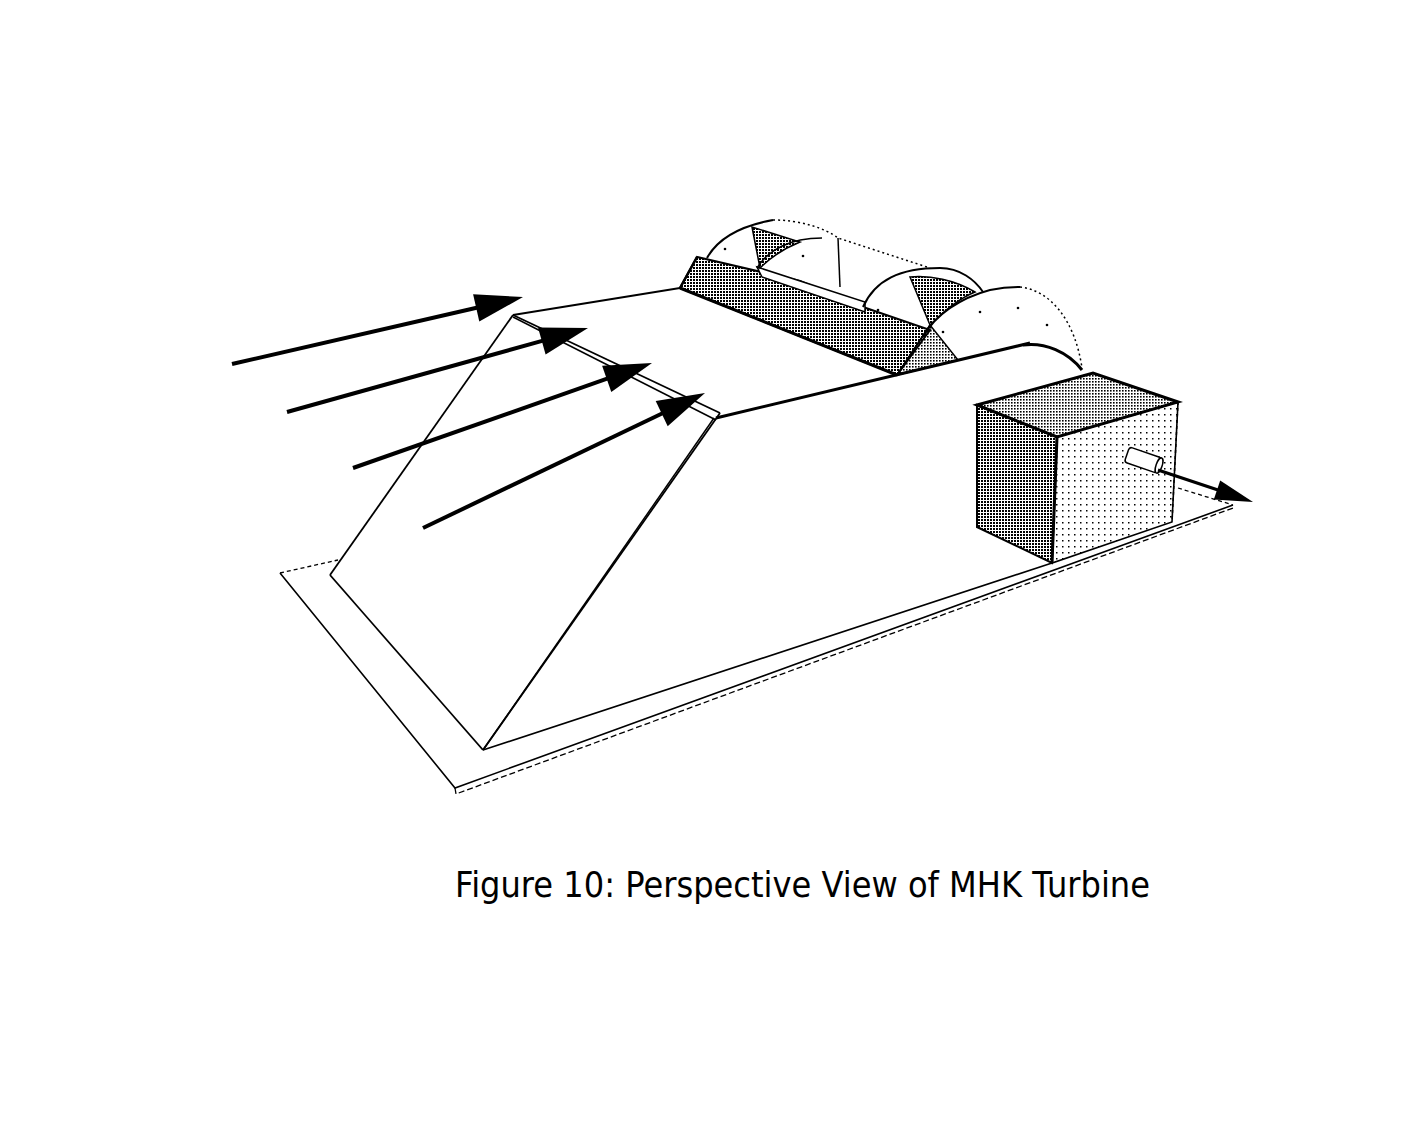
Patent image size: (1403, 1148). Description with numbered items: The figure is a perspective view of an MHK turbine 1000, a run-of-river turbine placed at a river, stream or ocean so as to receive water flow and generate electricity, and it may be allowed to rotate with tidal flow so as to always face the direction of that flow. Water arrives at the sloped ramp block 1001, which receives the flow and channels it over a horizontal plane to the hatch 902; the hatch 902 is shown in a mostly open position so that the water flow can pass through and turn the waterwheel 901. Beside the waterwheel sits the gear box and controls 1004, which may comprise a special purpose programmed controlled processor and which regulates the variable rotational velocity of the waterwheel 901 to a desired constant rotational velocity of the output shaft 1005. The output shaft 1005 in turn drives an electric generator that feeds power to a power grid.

The MHK turbine 1000 is at (423, 157).
The ramp block 1001 is at (425, 623).
The hatch 902 is at (697, 260).
The waterwheel 901 is at (958, 278).
The gear box and controls 1004 is at (1112, 523).
The output shaft 1005 is at (1240, 436).